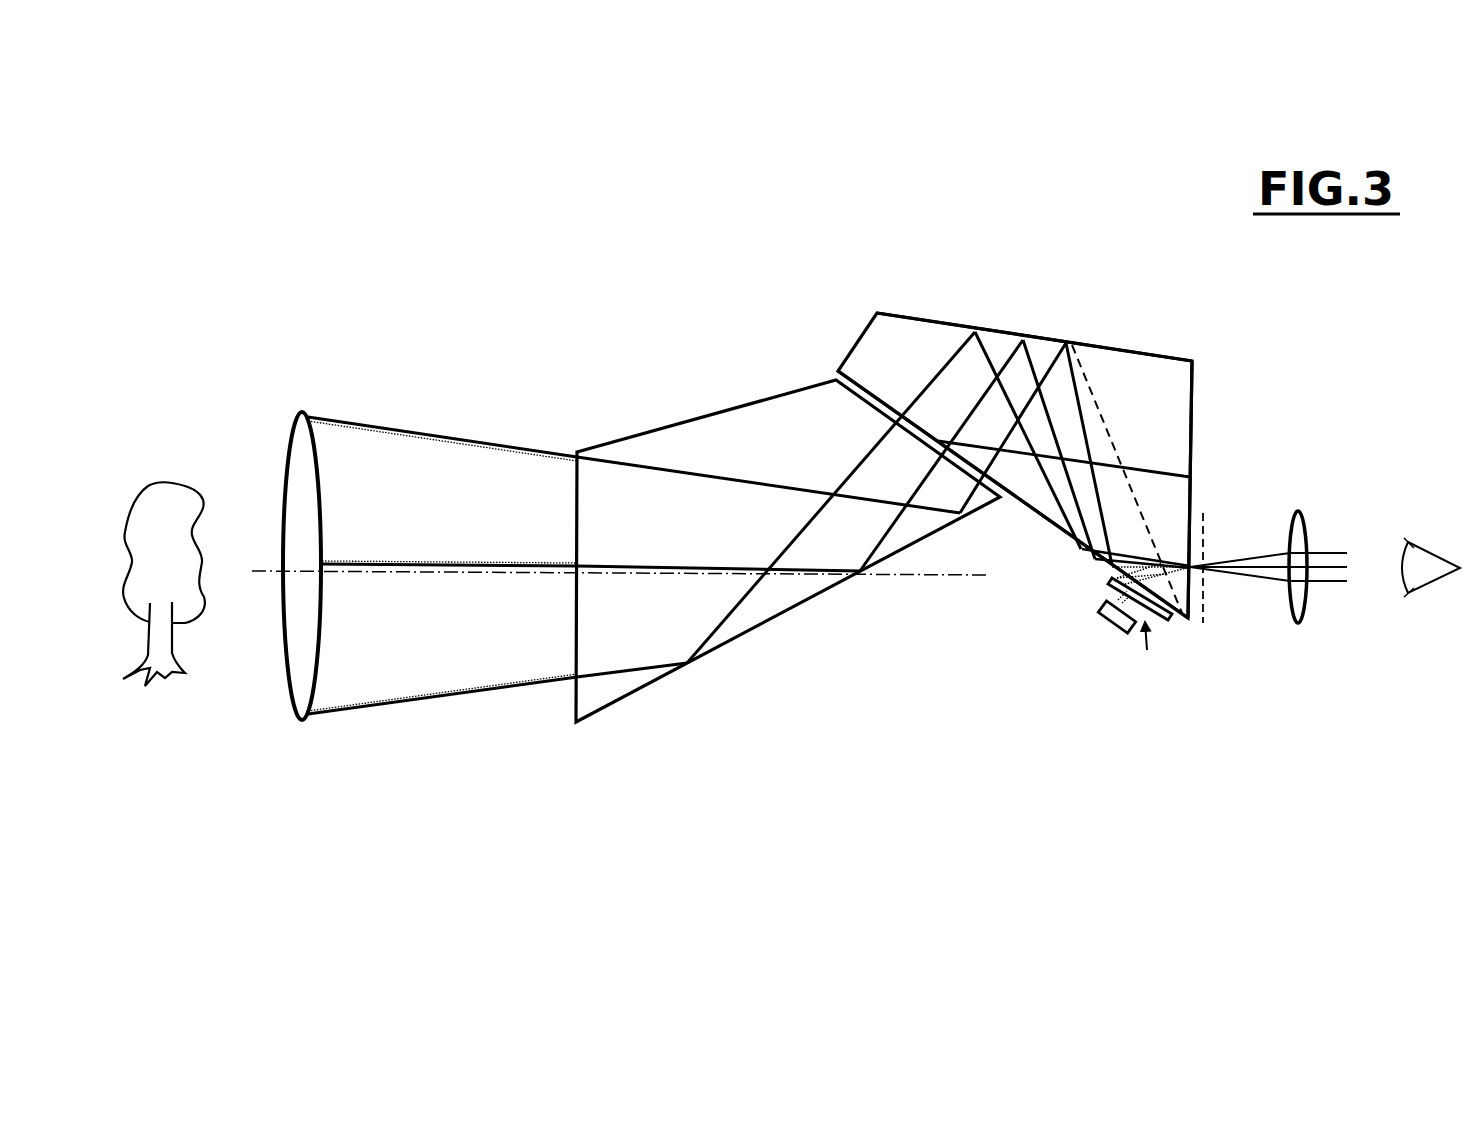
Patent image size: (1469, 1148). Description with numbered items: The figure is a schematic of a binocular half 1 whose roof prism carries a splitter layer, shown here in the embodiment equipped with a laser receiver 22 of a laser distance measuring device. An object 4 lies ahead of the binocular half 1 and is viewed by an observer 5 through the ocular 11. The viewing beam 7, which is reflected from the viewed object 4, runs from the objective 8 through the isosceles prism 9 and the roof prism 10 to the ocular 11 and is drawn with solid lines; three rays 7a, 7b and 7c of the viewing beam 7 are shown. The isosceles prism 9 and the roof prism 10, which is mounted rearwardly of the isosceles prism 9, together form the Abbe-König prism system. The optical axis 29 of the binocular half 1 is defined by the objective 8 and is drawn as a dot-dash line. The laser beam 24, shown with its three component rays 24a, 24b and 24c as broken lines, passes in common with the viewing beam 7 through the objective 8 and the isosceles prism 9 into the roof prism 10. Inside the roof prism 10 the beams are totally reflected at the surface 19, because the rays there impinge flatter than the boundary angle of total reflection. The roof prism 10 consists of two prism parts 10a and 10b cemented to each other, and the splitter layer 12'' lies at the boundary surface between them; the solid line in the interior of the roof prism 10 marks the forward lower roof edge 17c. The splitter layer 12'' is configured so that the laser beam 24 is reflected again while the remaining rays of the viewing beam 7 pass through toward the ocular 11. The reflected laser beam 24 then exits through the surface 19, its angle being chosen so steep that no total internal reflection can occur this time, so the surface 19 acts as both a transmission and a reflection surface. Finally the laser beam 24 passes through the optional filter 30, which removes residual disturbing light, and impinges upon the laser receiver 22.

The binocular half 1 is at (975, 466).
The object 4 is at (163, 710).
The observer 5 is at (1432, 630).
The viewing beam 7 is at (827, 560).
The ray of the viewing beam 7a is at (500, 442).
The ray of the viewing beam 7b is at (412, 562).
The ray of the viewing beam 7c is at (522, 685).
The objective 8 is at (300, 683).
The isosceles prism 9 is at (858, 555).
The roof prism 10 is at (1106, 415).
The prism part 10a is at (912, 345).
The prism part 10b is at (1168, 383).
The ocular 11 is at (1300, 622).
The splitter layer 12'' is at (1127, 421).
The forward lower roof edge 17c is at (1162, 468).
The surface 19 is at (1022, 510).
The laser receiver 22 is at (1118, 647).
The laser beam 24 is at (1147, 650).
The component ray of the laser beam 24a is at (450, 440).
The component ray of the laser beam 24b is at (347, 562).
The component ray of the laser beam 24c is at (445, 690).
The optical axis 29 is at (256, 560).
The filter 30 is at (1165, 625).